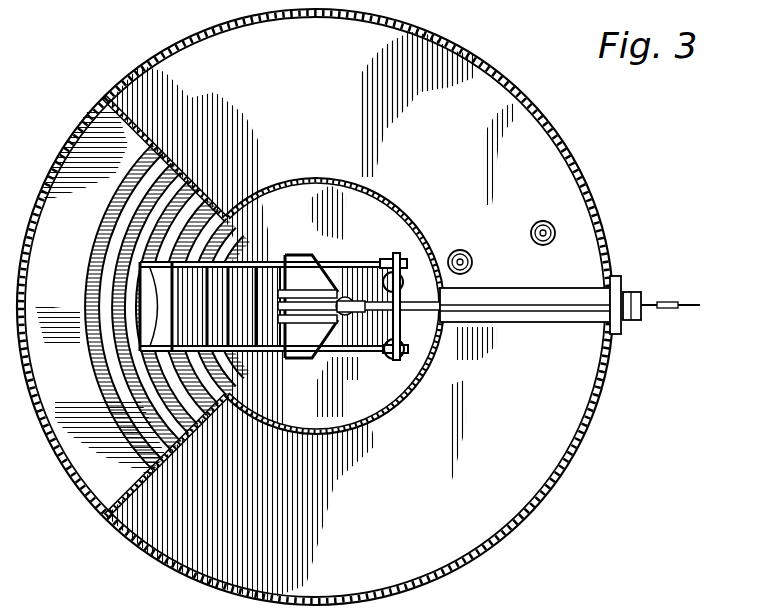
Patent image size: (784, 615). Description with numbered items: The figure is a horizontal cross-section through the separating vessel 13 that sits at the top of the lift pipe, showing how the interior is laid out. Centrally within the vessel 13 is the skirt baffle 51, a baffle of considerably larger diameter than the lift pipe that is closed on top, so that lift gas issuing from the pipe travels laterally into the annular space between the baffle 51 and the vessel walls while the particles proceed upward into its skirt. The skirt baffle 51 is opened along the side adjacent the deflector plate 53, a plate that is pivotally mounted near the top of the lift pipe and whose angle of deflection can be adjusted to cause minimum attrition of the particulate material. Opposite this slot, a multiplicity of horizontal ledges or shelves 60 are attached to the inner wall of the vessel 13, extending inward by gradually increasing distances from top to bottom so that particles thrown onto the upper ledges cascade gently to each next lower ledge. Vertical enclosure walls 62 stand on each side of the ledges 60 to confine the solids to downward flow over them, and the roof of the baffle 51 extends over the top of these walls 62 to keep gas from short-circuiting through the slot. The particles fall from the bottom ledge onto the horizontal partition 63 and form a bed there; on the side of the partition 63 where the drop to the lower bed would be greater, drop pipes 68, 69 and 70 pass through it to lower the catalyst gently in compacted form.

The separator vessel 13 is at (603, 212).
The horizontal partition 63 is at (541, 135).
The skirt baffle 51 is at (378, 420).
The horizontal ledges 60 is at (94, 446).
The vertical enclosure walls 62 is at (134, 131).
The deflector plate 53 is at (262, 346).
The drop pipe 68 is at (400, 280).
The drop pipe 69 is at (472, 264).
The drop pipe 70 is at (546, 221).